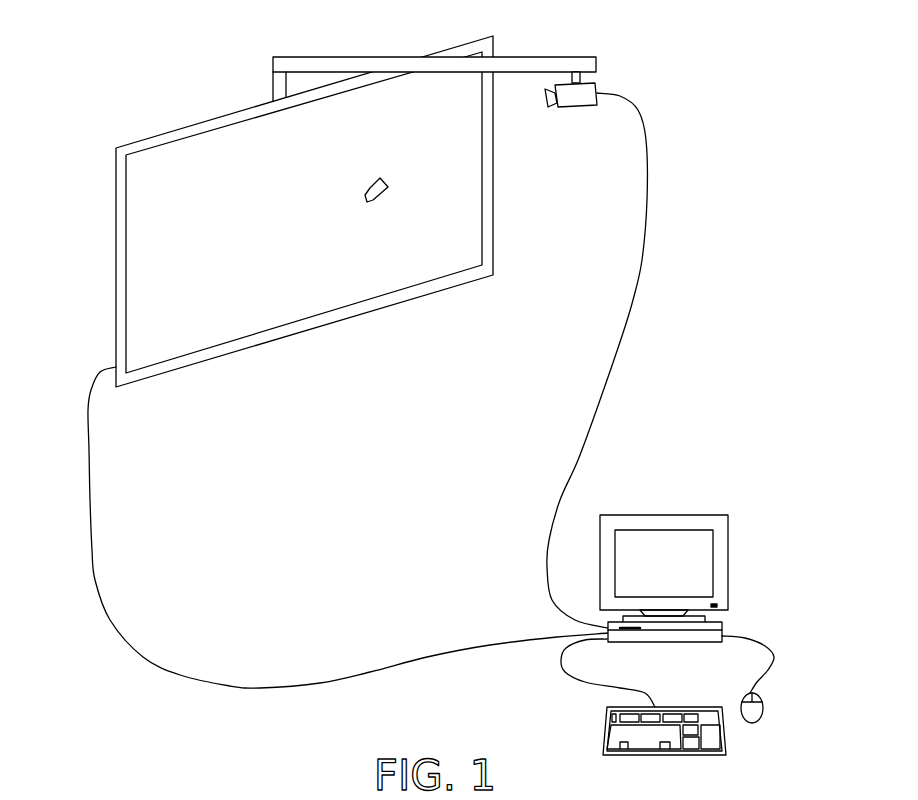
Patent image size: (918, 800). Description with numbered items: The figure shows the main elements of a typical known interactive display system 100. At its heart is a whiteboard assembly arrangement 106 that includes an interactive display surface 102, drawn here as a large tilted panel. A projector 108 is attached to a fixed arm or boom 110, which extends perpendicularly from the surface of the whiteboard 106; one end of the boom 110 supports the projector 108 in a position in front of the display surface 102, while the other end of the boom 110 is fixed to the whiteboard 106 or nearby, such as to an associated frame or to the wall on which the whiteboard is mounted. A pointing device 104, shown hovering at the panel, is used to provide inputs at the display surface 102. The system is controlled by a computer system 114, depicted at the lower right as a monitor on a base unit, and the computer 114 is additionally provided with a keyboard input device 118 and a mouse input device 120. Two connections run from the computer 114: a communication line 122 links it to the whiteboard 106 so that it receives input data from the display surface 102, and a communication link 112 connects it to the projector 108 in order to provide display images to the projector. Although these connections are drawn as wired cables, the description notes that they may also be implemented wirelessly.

The interactive display system 100 is at (687, 50).
The interactive display surface 102 is at (190, 324).
The pointing device 104 is at (374, 186).
The whiteboard assembly arrangement 106 is at (117, 173).
The projector 108 is at (580, 108).
The fixed arm or boom 110 is at (538, 63).
The communication link 112 is at (628, 325).
The computer system 114 is at (688, 643).
The keyboard input device 118 is at (603, 731).
The mouse input device 120 is at (764, 712).
The communication line 122 is at (375, 675).